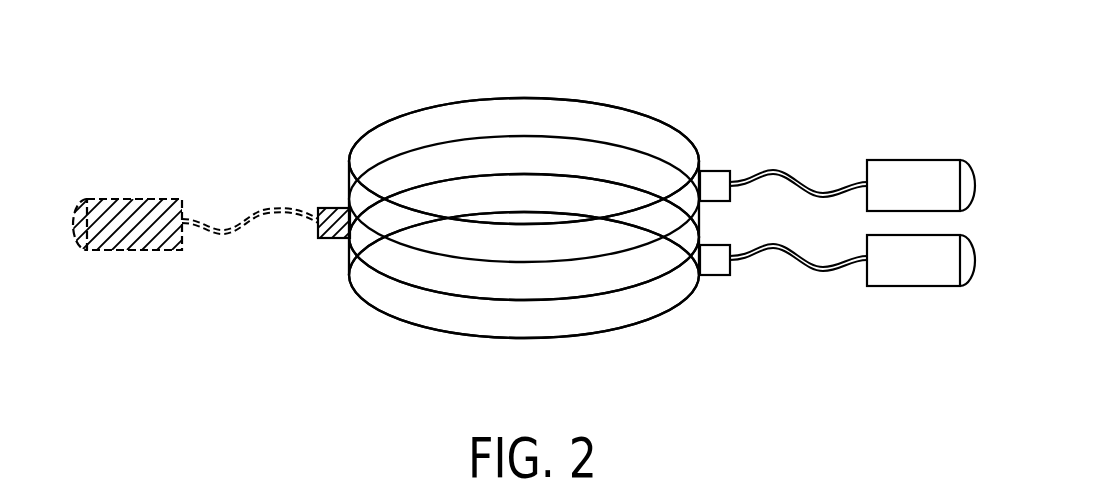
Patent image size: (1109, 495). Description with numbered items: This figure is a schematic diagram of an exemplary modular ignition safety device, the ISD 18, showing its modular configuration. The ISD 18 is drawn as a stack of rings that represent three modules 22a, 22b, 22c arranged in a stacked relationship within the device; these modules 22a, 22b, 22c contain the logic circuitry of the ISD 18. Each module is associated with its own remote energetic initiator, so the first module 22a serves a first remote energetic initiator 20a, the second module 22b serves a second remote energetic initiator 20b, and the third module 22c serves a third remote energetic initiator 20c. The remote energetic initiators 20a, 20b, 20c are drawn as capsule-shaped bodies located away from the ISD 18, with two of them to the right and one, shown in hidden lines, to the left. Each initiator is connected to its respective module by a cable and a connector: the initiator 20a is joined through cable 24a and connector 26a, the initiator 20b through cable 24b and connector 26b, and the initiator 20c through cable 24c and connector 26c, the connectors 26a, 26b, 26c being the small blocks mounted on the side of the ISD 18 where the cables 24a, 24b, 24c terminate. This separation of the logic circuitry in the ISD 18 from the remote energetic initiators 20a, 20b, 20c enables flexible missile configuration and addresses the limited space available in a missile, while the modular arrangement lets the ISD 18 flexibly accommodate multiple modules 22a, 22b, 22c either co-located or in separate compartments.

The ISD 18 is at (530, 134).
The remote energetic initiator 20a is at (912, 160).
The remote energetic initiator 20b is at (132, 199).
The remote energetic initiator 20c is at (913, 287).
The module 22a is at (396, 219).
The module 22b is at (398, 270).
The module 22c is at (422, 318).
The cable 24a is at (798, 186).
The cable 24b is at (233, 223).
The cable 24c is at (797, 268).
The connector 26a is at (712, 180).
The connector 26b is at (334, 230).
The connector 26c is at (713, 270).